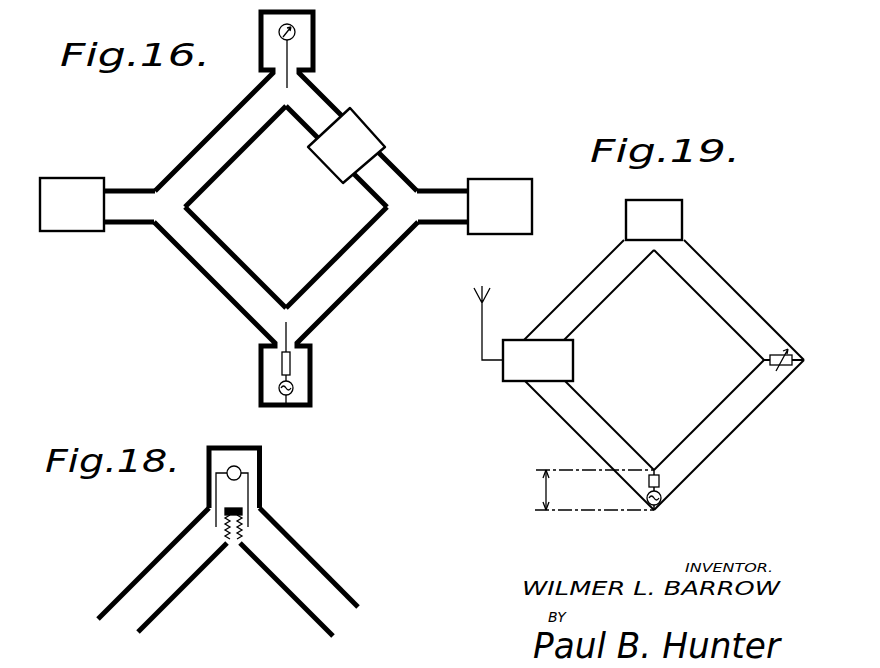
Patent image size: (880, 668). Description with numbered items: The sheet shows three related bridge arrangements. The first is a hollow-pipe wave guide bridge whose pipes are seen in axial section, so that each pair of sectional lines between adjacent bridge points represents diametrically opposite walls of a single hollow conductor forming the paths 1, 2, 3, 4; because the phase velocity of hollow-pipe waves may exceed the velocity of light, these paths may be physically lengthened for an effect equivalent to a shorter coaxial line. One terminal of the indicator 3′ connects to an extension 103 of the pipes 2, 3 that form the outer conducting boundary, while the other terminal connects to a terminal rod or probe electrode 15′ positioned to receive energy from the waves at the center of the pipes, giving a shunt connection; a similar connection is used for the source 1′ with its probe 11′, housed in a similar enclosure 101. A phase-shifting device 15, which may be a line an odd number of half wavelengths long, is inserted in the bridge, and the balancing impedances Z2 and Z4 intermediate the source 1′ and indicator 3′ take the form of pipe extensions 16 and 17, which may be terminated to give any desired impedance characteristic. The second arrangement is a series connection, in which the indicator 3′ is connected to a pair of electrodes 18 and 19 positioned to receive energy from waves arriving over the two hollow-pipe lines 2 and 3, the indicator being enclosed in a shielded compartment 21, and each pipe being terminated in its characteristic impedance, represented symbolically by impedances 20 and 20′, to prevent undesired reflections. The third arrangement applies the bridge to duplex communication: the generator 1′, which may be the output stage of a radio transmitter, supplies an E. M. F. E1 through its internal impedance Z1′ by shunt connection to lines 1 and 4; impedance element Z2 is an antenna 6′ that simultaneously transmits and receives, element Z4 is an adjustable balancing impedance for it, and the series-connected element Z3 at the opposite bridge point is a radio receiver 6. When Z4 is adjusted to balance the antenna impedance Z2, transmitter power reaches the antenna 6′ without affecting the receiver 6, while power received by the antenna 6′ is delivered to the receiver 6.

In FIG. 16, the path 1 is at (235, 257).
In FIG. 19, the path 1 is at (589, 445).
In FIG. 16, the path 2 is at (235, 156).
In FIG. 18, the path 2 is at (162, 570).
In FIG. 19, the path 2 is at (589, 290).
In FIG. 16, the path 3 is at (336, 156).
In FIG. 18, the path 3 is at (299, 572).
In FIG. 19, the path 3 is at (729, 300).
In FIG. 16, the path 4 is at (336, 257).
In FIG. 19, the path 4 is at (729, 435).
In FIG. 16, the source 1′ is at (293, 392).
In FIG. 19, the source 1′ is at (662, 500).
In FIG. 16, the indicator 3′ is at (296, 37).
In FIG. 18, the indicator 3′ is at (238, 466).
In FIG. 19, the receiver 6 is at (683, 216).
In FIG. 19, the antenna 6′ is at (480, 318).
In FIG. 16, the probe 11′ is at (284, 328).
In FIG. 16, the phase-shifting device 15 is at (376, 131).
In FIG. 16, the probe electrode 15′ is at (287, 86).
In FIG. 16, the pipe extension 16 is at (128, 224).
In FIG. 16, the pipe extension 17 is at (436, 188).
In FIG. 18, the electrode 18 is at (215, 494).
In FIG. 18, the electrode 19 is at (252, 497).
In FIG. 18, the impedance 20 is at (222, 532).
In FIG. 18, the impedance 20′ is at (240, 537).
In FIG. 18, the shielded compartment 21 is at (262, 462).
In FIG. 16, the source housing 101 is at (313, 382).
In FIG. 16, the extension 103 is at (315, 28).
In FIG. 16, the internal impedance Z1′ is at (281, 368).
In FIG. 19, the internal impedance Z1′ is at (660, 483).
In FIG. 16, the balancing impedance Z2 is at (72, 204).
In FIG. 19, the balancing impedance Z2 is at (500, 379).
In FIG. 19, the series-connected element Z3 is at (626, 216).
In FIG. 16, the balancing impedance Z4 is at (500, 206).
In FIG. 19, the balancing impedance Z4 is at (783, 371).
In FIG. 19, the E. M. F. E1 is at (594, 490).